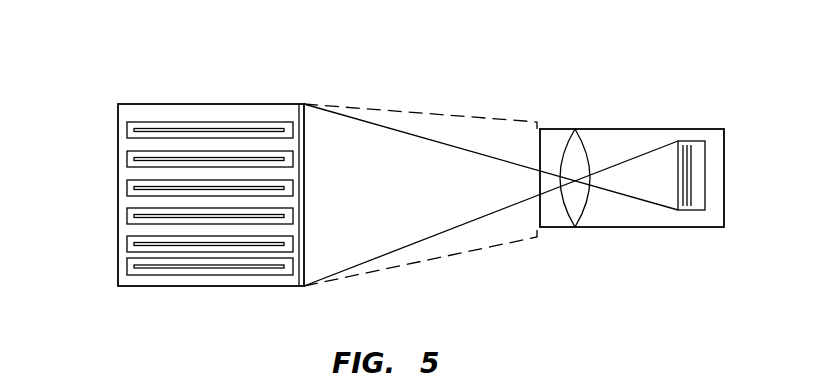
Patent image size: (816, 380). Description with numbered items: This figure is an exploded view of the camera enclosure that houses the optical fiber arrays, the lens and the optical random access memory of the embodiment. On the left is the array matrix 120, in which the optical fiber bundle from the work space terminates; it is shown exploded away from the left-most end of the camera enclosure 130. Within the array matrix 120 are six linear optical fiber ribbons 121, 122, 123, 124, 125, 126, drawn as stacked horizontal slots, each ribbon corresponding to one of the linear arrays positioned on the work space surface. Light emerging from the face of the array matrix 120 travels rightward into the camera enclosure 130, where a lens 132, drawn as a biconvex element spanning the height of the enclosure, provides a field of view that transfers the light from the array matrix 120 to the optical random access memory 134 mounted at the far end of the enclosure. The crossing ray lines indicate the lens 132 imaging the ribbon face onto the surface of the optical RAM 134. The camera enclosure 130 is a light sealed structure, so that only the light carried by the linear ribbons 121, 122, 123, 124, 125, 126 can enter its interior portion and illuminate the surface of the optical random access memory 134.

The array matrix 120 is at (267, 104).
The linear optical fiber ribbon 121 is at (127, 131).
The linear optical fiber ribbon 122 is at (127, 159).
The linear optical fiber ribbon 123 is at (127, 188).
The linear optical fiber ribbon 124 is at (127, 216).
The linear optical fiber ribbon 125 is at (127, 244).
The linear optical fiber ribbon 126 is at (127, 266).
The camera enclosure 130 is at (560, 129).
The lens 132 is at (588, 208).
The optical random access memory 134 is at (687, 141).